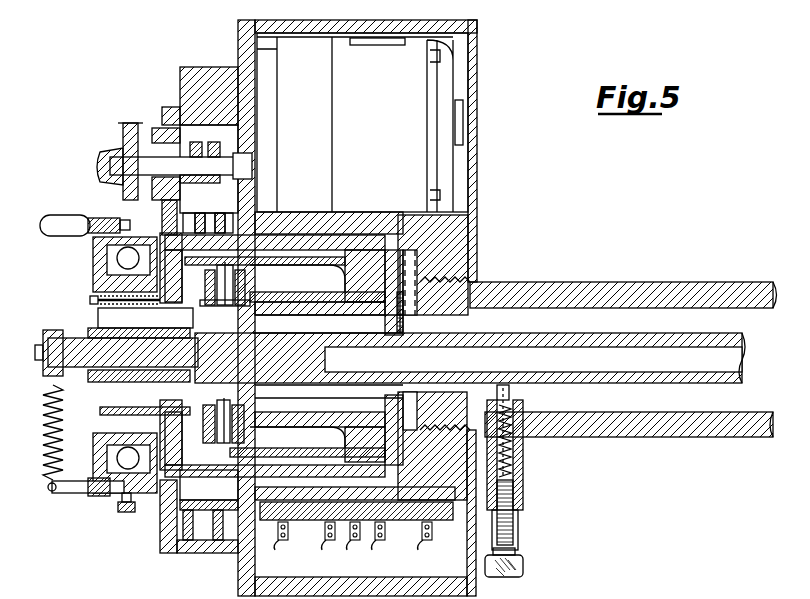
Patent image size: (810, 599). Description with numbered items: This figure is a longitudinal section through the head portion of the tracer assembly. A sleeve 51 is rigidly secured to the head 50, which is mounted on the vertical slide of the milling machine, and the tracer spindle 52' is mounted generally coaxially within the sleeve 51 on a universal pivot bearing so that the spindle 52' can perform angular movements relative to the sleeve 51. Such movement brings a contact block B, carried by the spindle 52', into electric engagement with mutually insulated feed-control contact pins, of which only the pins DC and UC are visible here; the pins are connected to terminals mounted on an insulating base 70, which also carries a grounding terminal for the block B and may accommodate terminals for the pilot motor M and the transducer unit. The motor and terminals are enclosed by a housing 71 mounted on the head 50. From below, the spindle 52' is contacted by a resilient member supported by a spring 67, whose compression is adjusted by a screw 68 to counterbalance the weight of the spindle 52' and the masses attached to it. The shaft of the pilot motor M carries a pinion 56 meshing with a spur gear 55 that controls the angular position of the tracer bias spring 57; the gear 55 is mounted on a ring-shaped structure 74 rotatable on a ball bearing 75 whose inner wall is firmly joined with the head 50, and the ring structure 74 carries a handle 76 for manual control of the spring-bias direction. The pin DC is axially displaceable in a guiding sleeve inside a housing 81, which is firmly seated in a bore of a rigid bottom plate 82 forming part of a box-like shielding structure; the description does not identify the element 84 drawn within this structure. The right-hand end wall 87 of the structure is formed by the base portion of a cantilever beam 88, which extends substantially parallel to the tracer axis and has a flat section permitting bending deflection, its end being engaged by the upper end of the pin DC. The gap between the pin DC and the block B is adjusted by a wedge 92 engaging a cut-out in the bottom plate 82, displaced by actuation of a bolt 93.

The head 50 is at (470, 228).
The sleeve 51 is at (550, 275).
The tracer spindle 52' is at (396, 347).
The spur gear 55 is at (122, 512).
The pinion 56 is at (122, 135).
The tracer bias spring 57 is at (45, 420).
The spring 67 is at (523, 458).
The screw 68 is at (523, 566).
The insulating base 70 is at (436, 522).
The housing 71 is at (478, 160).
The ring-shaped structure 74 is at (100, 498).
The ball bearing 75 is at (93, 262).
The handle 76 is at (56, 216).
The housing 81 is at (217, 284).
The bottom plate 82 is at (287, 295).
The armature shaft 84 is at (332, 232).
The right-hand end wall 87 is at (376, 232).
The cantilever beam 88 is at (275, 232).
The wedge 92 is at (190, 408).
The bolt 93 is at (90, 300).
The pilot motor M is at (410, 98).
The contact block B is at (195, 322).
The contact pin DC is at (240, 275).
The contact pin UC is at (240, 440).